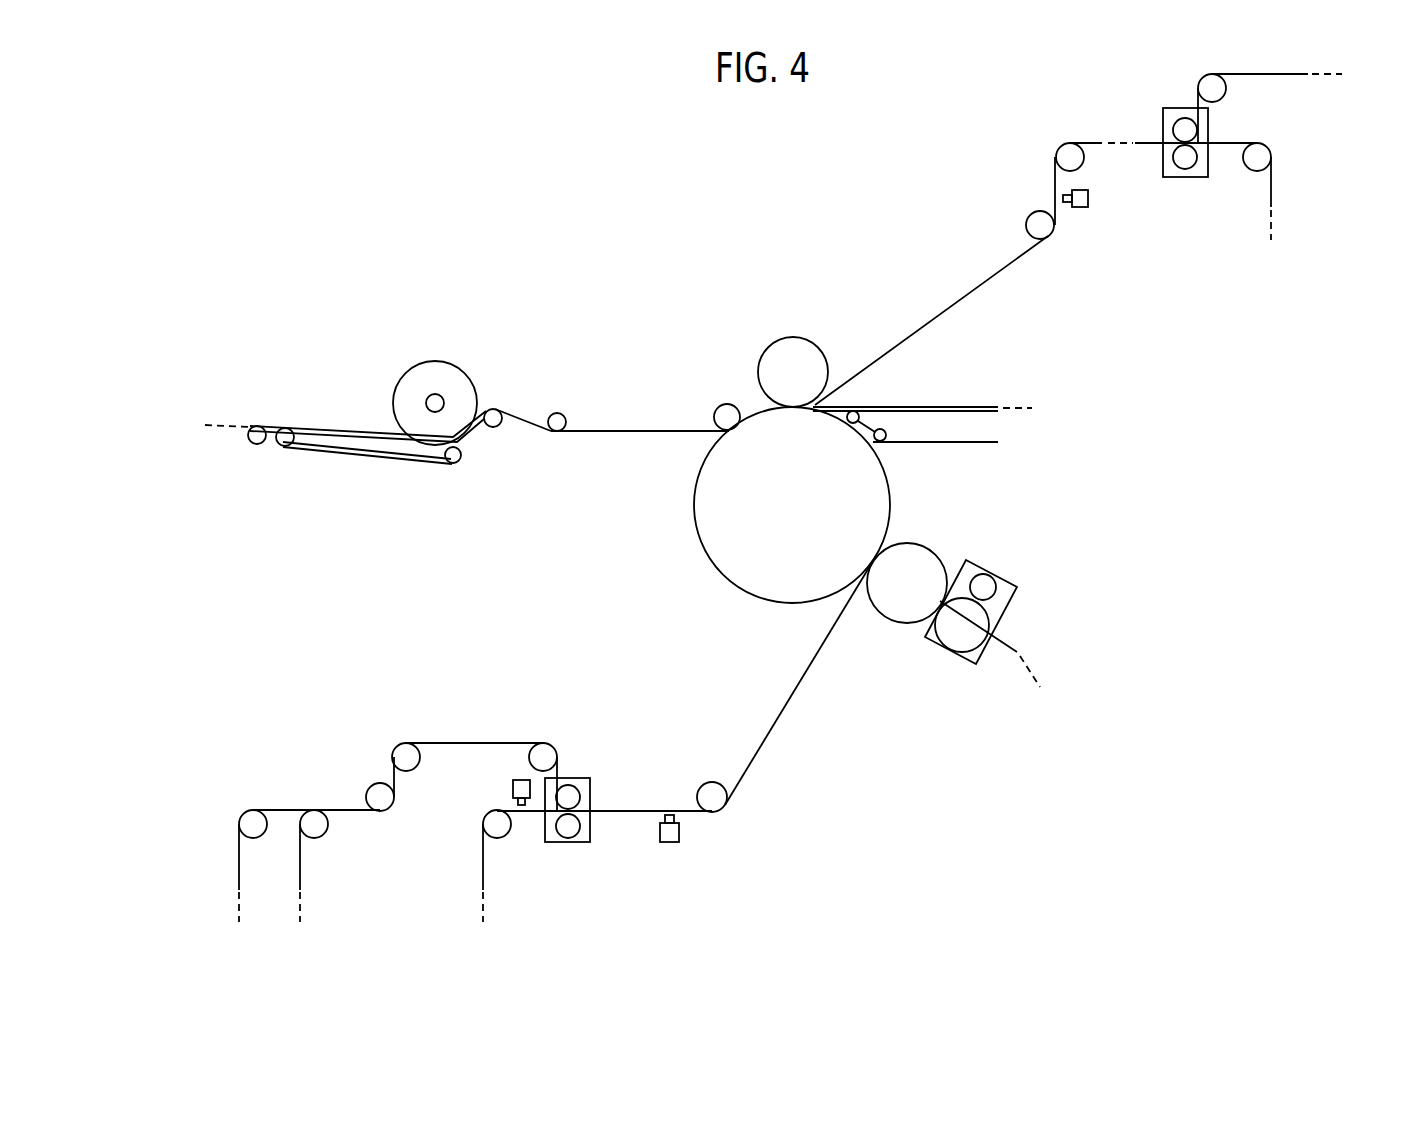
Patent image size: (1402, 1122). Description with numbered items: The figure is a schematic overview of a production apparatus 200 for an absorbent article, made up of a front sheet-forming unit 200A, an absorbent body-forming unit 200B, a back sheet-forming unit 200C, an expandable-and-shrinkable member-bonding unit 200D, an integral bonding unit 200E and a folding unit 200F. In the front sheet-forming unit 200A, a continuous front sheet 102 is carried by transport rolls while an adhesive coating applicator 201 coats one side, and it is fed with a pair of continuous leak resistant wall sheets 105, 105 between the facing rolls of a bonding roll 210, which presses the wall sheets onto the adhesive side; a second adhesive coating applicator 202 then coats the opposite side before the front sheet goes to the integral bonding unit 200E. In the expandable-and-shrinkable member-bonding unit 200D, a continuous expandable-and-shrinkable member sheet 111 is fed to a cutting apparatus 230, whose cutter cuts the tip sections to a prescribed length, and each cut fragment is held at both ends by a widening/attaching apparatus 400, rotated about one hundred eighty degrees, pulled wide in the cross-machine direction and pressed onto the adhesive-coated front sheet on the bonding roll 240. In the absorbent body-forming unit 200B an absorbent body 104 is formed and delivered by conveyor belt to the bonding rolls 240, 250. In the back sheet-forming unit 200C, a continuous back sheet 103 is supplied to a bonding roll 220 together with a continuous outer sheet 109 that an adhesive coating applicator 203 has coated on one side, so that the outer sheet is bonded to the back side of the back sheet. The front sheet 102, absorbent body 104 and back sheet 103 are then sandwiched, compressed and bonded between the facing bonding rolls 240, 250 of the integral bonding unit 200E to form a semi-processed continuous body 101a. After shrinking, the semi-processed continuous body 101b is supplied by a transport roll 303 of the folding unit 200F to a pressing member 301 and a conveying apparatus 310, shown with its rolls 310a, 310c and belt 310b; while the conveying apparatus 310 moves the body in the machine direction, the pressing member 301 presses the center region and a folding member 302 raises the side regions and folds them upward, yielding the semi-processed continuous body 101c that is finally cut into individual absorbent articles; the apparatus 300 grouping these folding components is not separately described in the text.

The production apparatus 200 is at (398, 150).
The front sheet-forming unit 200A is at (732, 880).
The absorbent body-forming unit 200B is at (1060, 425).
The back sheet-forming unit 200C is at (1015, 103).
The expandable-and-shrinkable member-bonding unit 200D is at (905, 670).
The integral bonding unit 200E is at (682, 458).
The folding unit 200F is at (248, 308).
The semi-processed continuous body 101a is at (748, 400).
The semi-processed continuous body 101b is at (607, 422).
The semi-processed continuous body 101c is at (275, 415).
The continuous front sheet 102 is at (482, 880).
The continuous back sheet 103 is at (1283, 76).
The absorbent body 104 is at (963, 405).
The continuous leak resistant wall sheets 105 is at (238, 880).
The continuous outer sheet 109 is at (1273, 178).
The continuous expandable-and-shrinkable member sheet 111 is at (1018, 652).
The adhesive coating applicator 201 is at (510, 790).
The adhesive coating applicator 202 is at (670, 843).
The adhesive coating applicator 203 is at (1079, 208).
The bonding roll 210 is at (563, 860).
The bonding roll 220 is at (1185, 178).
The cutting apparatus 230 is at (990, 560).
The bonding roll 240 is at (690, 548).
The bonding roll 250 is at (782, 332).
The coating unit 300 is at (312, 333).
The pressing member 301 is at (447, 362).
The folding member 302 is at (363, 428).
The transport roll 303 is at (493, 428).
The conveying apparatus 310 is at (335, 548).
The drive roller 310a is at (452, 465).
The conveyor belt 310b is at (345, 458).
The driven rollers 310c is at (283, 447).
The widening/attaching apparatus 400 is at (920, 543).